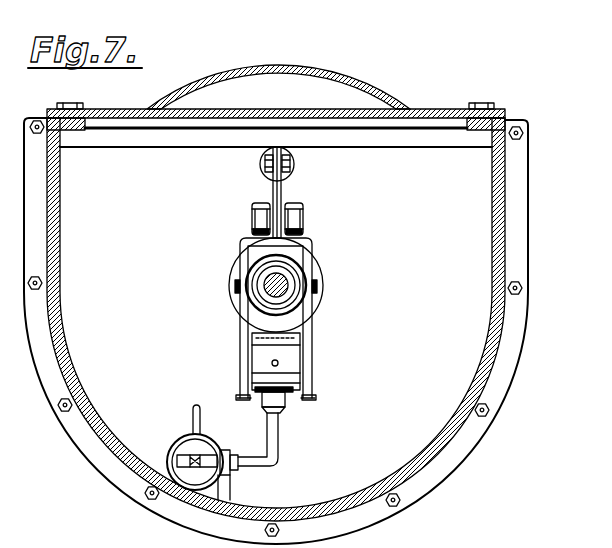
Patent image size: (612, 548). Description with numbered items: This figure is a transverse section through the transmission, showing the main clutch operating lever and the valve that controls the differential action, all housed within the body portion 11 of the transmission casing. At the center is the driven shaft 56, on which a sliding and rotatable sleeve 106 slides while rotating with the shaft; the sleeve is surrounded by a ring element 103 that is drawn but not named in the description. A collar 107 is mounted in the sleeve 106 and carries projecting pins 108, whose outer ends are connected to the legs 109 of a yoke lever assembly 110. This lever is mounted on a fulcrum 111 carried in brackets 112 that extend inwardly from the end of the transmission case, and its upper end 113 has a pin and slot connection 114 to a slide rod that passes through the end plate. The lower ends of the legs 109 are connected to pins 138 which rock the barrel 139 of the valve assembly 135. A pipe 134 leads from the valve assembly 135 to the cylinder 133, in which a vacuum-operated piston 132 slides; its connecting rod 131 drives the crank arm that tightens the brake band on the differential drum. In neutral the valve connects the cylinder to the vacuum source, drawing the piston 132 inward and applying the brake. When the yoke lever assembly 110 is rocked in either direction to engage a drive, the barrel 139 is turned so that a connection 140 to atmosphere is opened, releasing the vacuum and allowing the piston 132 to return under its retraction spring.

The body portion 11 is at (110, 453).
The shaft 56 is at (268, 290).
The inner ring 103 is at (289, 291).
The sliding and rotatable sleeve 106 is at (254, 278).
The collar 107 is at (255, 264).
The projecting pins 108 is at (318, 285).
The legs 109 is at (313, 265).
The yoke lever assembly 110 is at (324, 237).
The fulcrum 111 is at (304, 220).
The brackets 112 is at (252, 207).
The upper end 113 is at (287, 182).
The pin and slot connection 114 is at (262, 165).
The connecting rod 131 is at (226, 456).
The piston 132 is at (182, 442).
The cylinder 133 is at (203, 438).
The pipe 134 is at (275, 457).
The valve assembly 135 is at (234, 392).
The pins 138 is at (314, 386).
The barrel 139 is at (252, 350).
The connection to atmosphere 140 is at (278, 366).